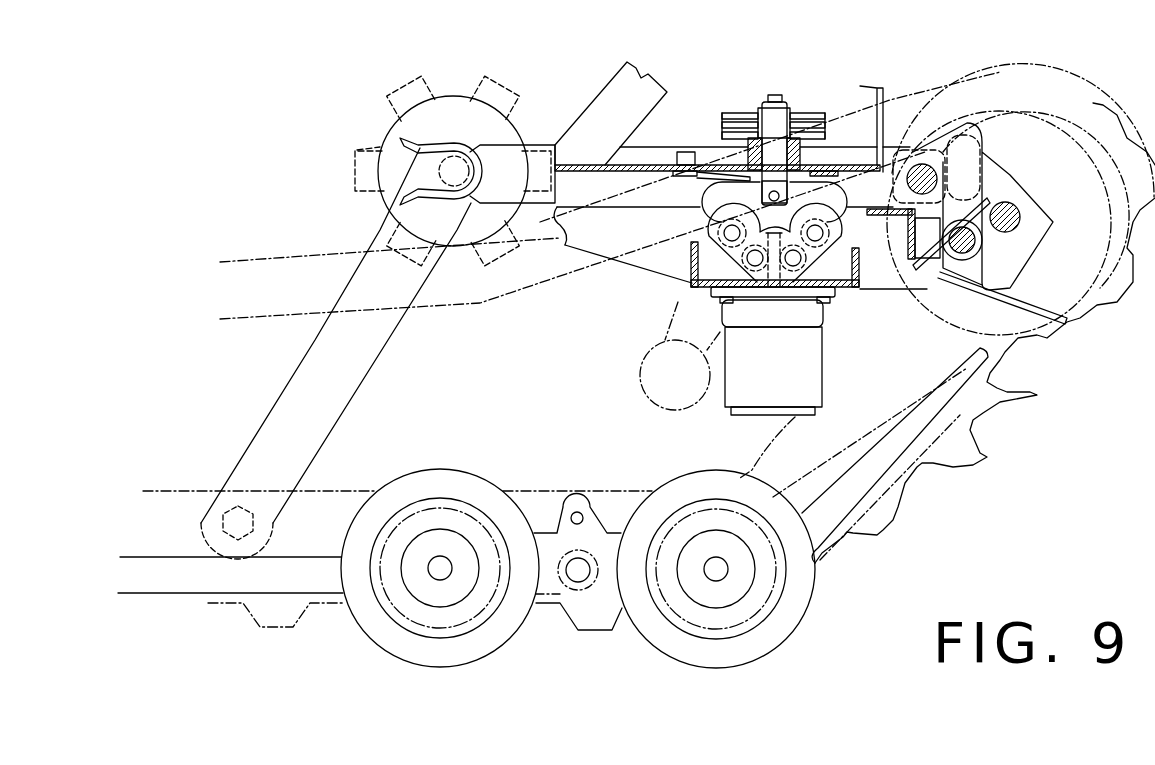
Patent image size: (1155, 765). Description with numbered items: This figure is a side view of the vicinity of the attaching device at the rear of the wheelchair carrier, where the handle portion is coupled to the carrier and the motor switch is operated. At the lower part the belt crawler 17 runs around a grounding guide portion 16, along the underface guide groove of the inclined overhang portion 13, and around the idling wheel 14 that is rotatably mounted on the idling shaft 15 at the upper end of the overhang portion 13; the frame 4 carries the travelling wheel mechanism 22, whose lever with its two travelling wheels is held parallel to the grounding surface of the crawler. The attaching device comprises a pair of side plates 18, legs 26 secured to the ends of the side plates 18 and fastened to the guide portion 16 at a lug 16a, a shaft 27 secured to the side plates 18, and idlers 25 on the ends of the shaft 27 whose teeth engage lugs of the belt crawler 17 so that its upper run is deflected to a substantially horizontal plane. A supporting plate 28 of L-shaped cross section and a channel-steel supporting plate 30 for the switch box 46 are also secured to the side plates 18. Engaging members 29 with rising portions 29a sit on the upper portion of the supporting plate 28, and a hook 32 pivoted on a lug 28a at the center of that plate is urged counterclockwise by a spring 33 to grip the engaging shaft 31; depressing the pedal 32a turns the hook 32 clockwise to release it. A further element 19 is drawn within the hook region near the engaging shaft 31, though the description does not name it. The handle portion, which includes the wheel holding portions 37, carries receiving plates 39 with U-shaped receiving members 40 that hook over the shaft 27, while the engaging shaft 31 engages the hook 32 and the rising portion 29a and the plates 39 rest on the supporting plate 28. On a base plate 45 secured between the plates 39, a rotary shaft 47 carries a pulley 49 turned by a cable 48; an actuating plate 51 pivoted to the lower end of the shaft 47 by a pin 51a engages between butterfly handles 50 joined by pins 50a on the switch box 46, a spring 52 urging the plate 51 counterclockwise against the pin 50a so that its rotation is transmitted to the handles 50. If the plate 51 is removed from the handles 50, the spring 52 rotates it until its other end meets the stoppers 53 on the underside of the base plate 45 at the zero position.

The frame 4 is at (275, 606).
The overhang portion 13 is at (878, 452).
The idling wheel 14 is at (928, 322).
The idling shaft 15 is at (1012, 240).
The grounding guide portion 16 is at (182, 585).
The lug 16a is at (230, 521).
The belt crawler 17 is at (888, 520).
The side plate 18 is at (614, 240).
The pin 19 is at (1014, 207).
The travelling wheel mechanism 22 is at (597, 632).
The idler 25 is at (385, 150).
The leg 26 is at (365, 372).
The shaft 27 is at (455, 178).
The supporting plate 28 is at (893, 250).
The lug 28a is at (903, 246).
The engaging member 29 is at (893, 205).
The rising portion 29a is at (965, 152).
The supporting plate 30 is at (710, 292).
The engaging shaft 31 is at (921, 164).
The hook 32 is at (962, 126).
The pedal 32a is at (1018, 303).
The spring 33 is at (975, 252).
The wheel holding portion 37 is at (660, 392).
The receiving plate 39 is at (508, 148).
The receiving member 40 is at (425, 143).
The base plate 45 is at (828, 168).
The switch box 46 is at (808, 380).
The rotary shaft 47 is at (740, 152).
The cable 48 is at (822, 118).
The pulley 49 is at (750, 117).
The butterfly handle 50 is at (715, 255).
The pin 50a is at (726, 232).
The actuating plate 51 is at (705, 203).
The pin 51a is at (768, 198).
The spring 52 is at (672, 166).
The stopper 53 is at (800, 208).